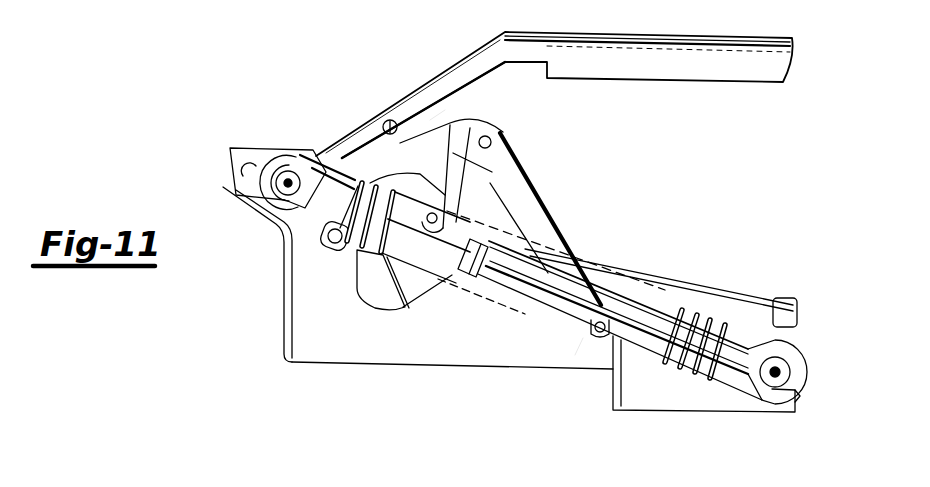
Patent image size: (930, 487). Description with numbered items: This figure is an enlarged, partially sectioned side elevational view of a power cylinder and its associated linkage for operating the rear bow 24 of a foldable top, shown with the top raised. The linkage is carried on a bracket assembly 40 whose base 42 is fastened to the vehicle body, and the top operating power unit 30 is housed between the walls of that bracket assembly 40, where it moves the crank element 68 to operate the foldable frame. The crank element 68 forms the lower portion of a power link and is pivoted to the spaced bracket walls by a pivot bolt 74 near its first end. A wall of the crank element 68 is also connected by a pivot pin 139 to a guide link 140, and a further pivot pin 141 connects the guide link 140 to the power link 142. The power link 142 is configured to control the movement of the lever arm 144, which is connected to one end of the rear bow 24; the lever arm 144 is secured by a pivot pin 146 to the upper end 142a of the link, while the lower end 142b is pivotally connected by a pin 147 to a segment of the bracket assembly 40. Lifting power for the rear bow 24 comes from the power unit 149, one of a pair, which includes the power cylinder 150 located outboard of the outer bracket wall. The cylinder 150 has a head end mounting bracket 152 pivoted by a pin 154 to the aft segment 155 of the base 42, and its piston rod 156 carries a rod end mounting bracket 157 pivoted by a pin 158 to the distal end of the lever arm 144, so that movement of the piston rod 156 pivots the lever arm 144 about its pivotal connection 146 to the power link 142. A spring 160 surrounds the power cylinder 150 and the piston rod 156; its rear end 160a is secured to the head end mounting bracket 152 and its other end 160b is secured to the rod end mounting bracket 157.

The rear bow 24 is at (623, 62).
The power unit 30 is at (733, 293).
The bracket assembly 40 is at (343, 353).
The base 42 is at (642, 411).
The crank element 68 is at (412, 292).
The pivot bolt 74 is at (334, 244).
The pivot pin 139 is at (512, 232).
The guide link 140 is at (490, 183).
The pivot pin 141 is at (493, 142).
The power link 142 is at (545, 210).
The upper end of guide link 142a is at (430, 138).
The lower end of guide link 142b is at (596, 338).
The lever arm 144 is at (343, 153).
The pivot pin 146 is at (390, 120).
The pin 147 is at (596, 336).
The power unit 149 is at (593, 304).
The power cylinder 150 is at (560, 292).
The head end mounting bracket 152 is at (795, 352).
The pin 154 is at (762, 392).
The aft segment 155 is at (800, 402).
The piston rod 156 is at (458, 247).
The rod end mounting bracket 157 is at (270, 153).
The pin 158 is at (290, 181).
The spring 160 is at (684, 308).
The spring rear end 160a is at (775, 378).
The other end of spring 160b is at (232, 196).